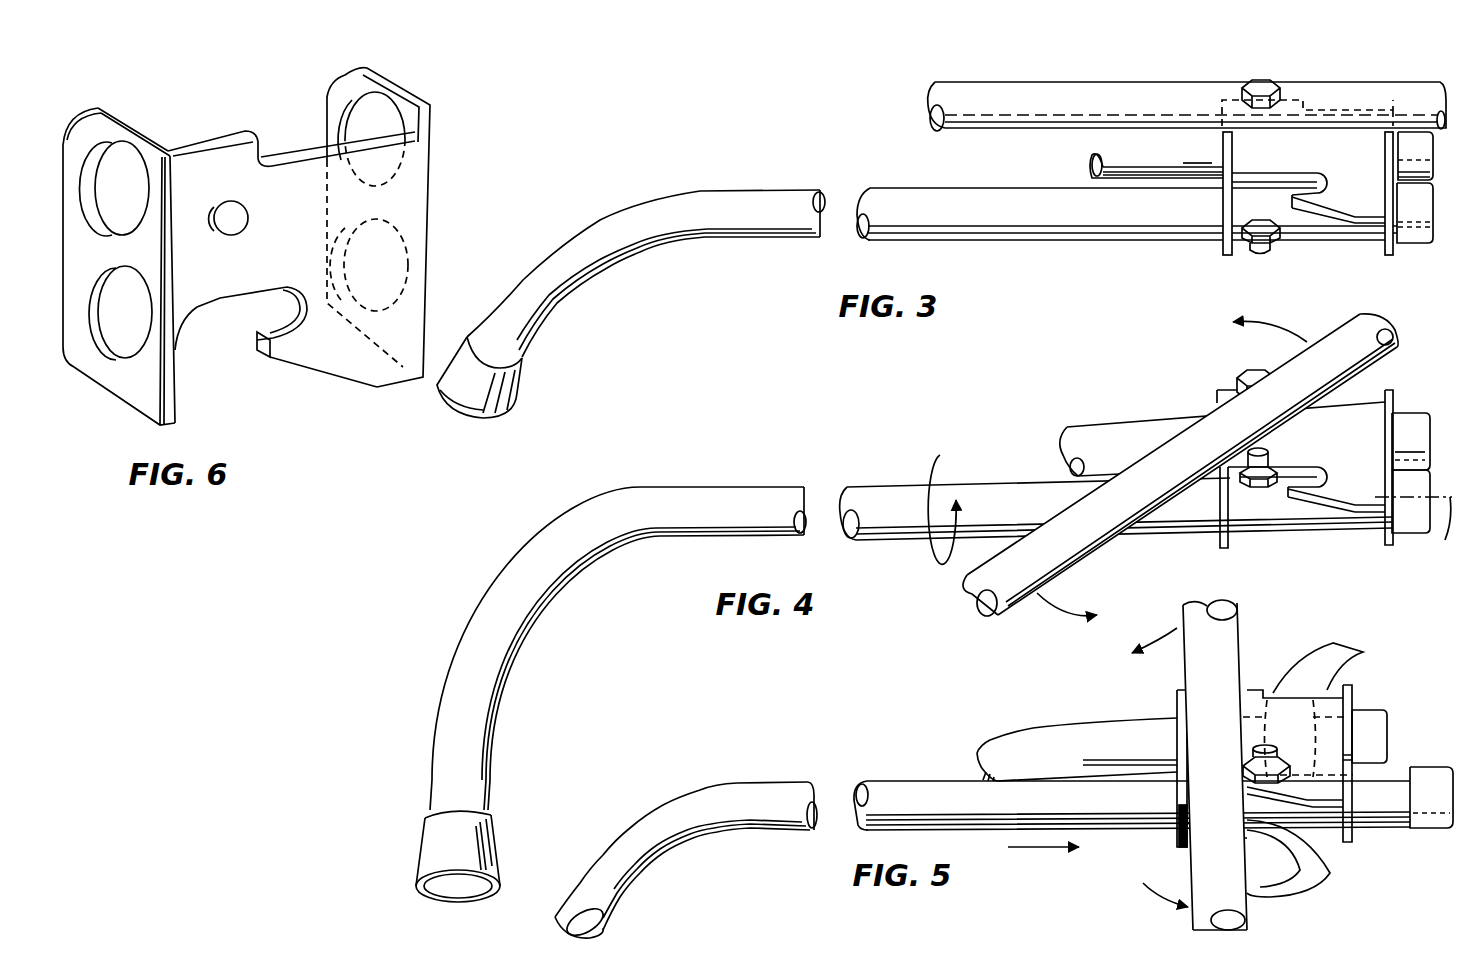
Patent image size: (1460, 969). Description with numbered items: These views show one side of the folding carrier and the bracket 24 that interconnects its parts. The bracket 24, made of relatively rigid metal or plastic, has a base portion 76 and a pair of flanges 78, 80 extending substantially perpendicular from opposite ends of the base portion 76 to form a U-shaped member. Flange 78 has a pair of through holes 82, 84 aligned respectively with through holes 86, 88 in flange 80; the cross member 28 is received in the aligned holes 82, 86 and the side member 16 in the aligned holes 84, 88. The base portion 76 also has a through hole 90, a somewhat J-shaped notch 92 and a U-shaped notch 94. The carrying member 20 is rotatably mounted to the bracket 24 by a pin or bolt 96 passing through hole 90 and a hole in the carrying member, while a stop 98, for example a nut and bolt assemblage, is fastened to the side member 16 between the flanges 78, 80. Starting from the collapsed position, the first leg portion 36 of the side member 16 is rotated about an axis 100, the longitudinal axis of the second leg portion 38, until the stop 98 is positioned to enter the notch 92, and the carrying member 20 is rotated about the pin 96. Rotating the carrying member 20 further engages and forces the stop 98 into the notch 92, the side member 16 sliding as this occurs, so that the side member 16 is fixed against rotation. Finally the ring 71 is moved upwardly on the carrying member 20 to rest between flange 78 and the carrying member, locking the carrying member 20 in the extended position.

In FIG. 3, the side member 16 is at (1145, 235).
In FIG. 4, the side member 16 is at (898, 483).
In FIG. 5, the side member 16 is at (928, 780).
In FIG. 3, the carrying member 20 is at (947, 80).
In FIG. 4, the carrying member 20 is at (1102, 542).
In FIG. 5, the carrying member 20 is at (1240, 645).
In FIG. 6, the bracket 24 is at (269, 243).
In FIG. 3, the bracket 24 is at (1281, 165).
In FIG. 4, the bracket 24 is at (1300, 460).
In FIG. 5, the bracket 24 is at (1265, 757).
In FIG. 3, the cross member 28 is at (1107, 148).
In FIG. 4, the cross member 28 is at (1140, 422).
In FIG. 5, the cross member 28 is at (1060, 723).
In FIG. 3, the first leg portion 36 is at (600, 270).
In FIG. 4, the first leg portion 36 is at (620, 494).
In FIG. 5, the first leg portion 36 is at (686, 861).
In FIG. 3, the second leg portion 38 is at (1107, 237).
In FIG. 5, the ring 71 is at (1188, 822).
In FIG. 6, the base portion 76 is at (213, 153).
In FIG. 6, the flange 78 is at (177, 257).
In FIG. 6, the flange 80 is at (379, 221).
In FIG. 6, the through hole 82 is at (140, 215).
In FIG. 6, the through hole 84 is at (115, 360).
In FIG. 6, the through hole 86 is at (393, 108).
In FIG. 6, the through hole 88 is at (405, 290).
In FIG. 6, the through hole 90 is at (248, 223).
In FIG. 6, the J-shaped notch 92 is at (237, 357).
In FIG. 3, the J-shaped notch 92 is at (1262, 192).
In FIG. 4, the J-shaped notch 92 is at (1306, 489).
In FIG. 6, the U-shaped notch 94 is at (280, 138).
In FIG. 3, the pin or bolt 96 is at (1257, 80).
In FIG. 4, the pin or bolt 96 is at (1253, 372).
In FIG. 3, the stop 98 is at (1268, 243).
In FIG. 4, the stop 98 is at (1260, 487).
In FIG. 4, the axis 100 is at (1413, 492).